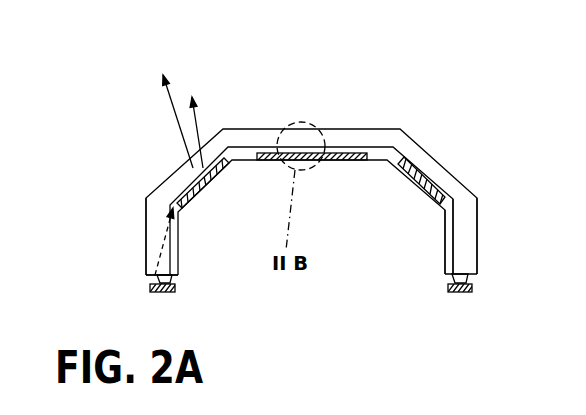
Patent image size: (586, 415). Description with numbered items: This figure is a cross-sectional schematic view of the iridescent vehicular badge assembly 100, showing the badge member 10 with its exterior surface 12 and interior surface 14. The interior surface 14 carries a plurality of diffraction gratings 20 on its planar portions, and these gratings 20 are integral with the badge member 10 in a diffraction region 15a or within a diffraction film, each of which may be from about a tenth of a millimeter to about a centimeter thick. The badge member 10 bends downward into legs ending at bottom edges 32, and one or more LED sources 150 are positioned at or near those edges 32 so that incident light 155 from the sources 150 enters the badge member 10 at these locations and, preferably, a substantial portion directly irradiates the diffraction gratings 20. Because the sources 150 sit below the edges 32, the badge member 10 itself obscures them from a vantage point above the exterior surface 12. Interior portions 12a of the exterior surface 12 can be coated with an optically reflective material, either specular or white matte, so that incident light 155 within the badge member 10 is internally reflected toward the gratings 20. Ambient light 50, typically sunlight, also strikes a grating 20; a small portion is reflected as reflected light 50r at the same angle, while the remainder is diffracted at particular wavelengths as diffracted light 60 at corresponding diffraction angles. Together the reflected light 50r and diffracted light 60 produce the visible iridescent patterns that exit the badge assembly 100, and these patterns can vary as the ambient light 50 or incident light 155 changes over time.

The iridescent vehicular badge assembly 100 is at (490, 120).
The badge member 10 is at (157, 265).
The exterior surface 12 is at (247, 128).
The interior portions of the exterior surface 12a is at (146, 208).
The interior surface 14 is at (233, 163).
The diffraction gratings 20 is at (412, 160).
The bottom edges 32 is at (462, 267).
The diffraction region 15a is at (455, 242).
The ambient light 50 is at (187, 175).
The reflected light 50r is at (197, 122).
The diffracted light 60 is at (172, 100).
The LED sources 150 is at (169, 294).
The incident light 155 is at (145, 252).